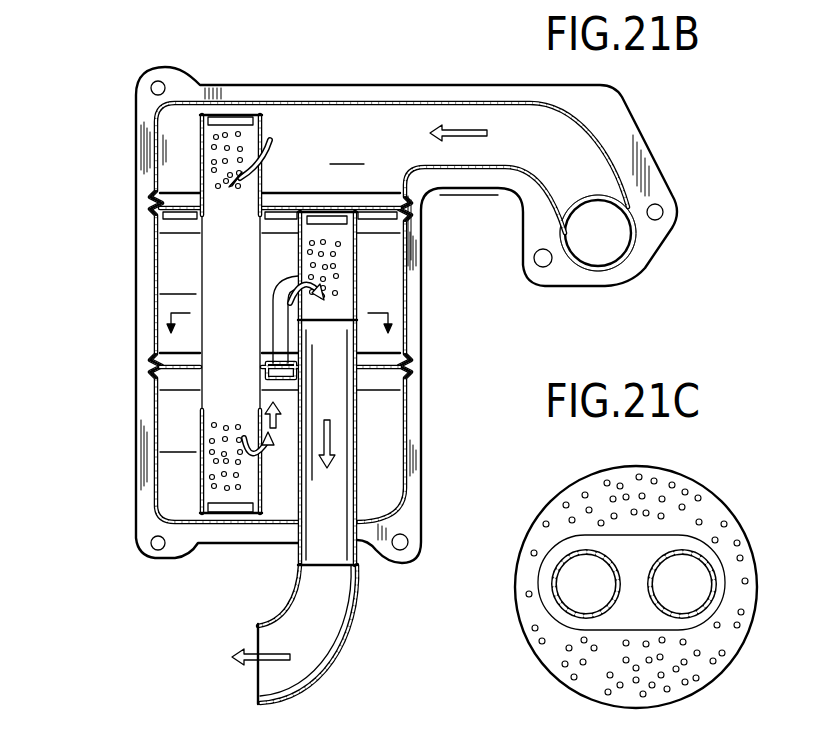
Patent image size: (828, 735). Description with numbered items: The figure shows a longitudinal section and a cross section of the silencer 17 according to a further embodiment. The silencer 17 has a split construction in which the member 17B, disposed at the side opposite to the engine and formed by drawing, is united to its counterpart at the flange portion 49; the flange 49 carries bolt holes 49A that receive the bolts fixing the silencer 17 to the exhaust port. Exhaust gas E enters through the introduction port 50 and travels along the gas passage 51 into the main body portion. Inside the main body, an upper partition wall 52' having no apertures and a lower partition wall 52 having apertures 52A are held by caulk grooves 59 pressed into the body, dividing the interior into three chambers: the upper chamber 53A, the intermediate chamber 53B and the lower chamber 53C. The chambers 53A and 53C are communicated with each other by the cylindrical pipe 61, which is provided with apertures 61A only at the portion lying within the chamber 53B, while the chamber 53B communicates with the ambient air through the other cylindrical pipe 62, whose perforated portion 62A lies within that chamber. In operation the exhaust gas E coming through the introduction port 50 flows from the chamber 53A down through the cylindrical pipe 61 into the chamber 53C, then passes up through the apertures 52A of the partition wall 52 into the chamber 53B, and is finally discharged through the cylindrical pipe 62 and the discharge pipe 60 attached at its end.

In FIG. 21B, the silencer 17 is at (122, 232).
In FIG. 21B, the member disposed at the opposite side to the engine 17B is at (403, 104).
In FIG. 21B, the flange portion 49 is at (648, 177).
In FIG. 21B, the bolt holes 49A is at (658, 209).
In FIG. 21B, the introduction port 50 is at (613, 250).
In FIG. 21B, the gas passage 51 is at (492, 160).
In FIG. 21B, the lower partition wall 52 is at (231, 339).
In FIG. 21C, the lower partition wall 52 is at (652, 573).
In FIG. 21B, the upper partition wall 52' is at (231, 189).
In FIG. 21B, the apertures 52A is at (363, 368).
In FIG. 21C, the apertures 52A is at (688, 498).
In FIG. 21B, the upper chamber 53A is at (418, 145).
In FIG. 21B, the intermediate chamber 53B is at (276, 311).
In FIG. 21B, the lower chamber 53C is at (220, 427).
In FIG. 21B, the caulk grooves 59 is at (158, 200).
In FIG. 21B, the discharge pipe 60 is at (340, 655).
In FIG. 21B, the cylindrical pipe 61 is at (168, 357).
In FIG. 21C, the cylindrical pipe 61 is at (565, 593).
In FIG. 21B, the apertures 61A is at (227, 147).
In FIG. 21B, the cylindrical pipe 62 is at (355, 458).
In FIG. 21C, the cylindrical pipe 62 is at (700, 590).
In FIG. 21B, the perforated portion of outlet pipe 62A is at (340, 267).